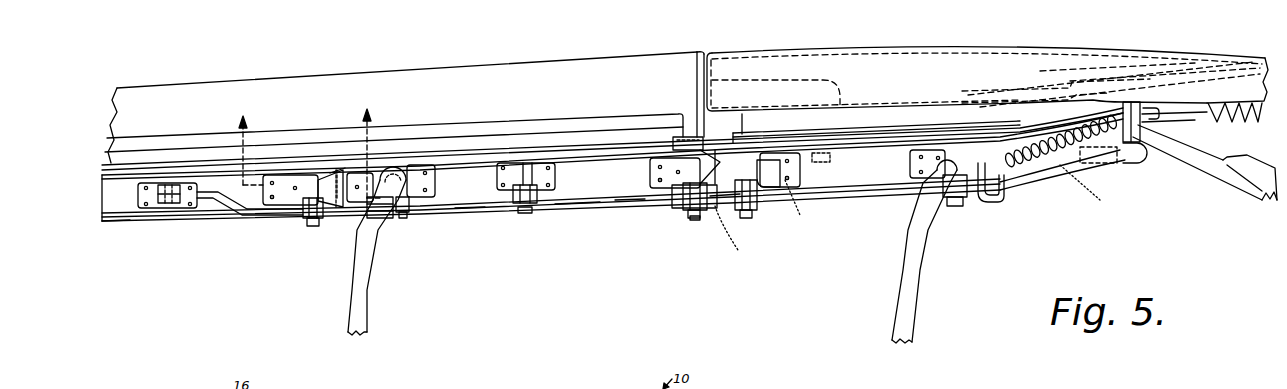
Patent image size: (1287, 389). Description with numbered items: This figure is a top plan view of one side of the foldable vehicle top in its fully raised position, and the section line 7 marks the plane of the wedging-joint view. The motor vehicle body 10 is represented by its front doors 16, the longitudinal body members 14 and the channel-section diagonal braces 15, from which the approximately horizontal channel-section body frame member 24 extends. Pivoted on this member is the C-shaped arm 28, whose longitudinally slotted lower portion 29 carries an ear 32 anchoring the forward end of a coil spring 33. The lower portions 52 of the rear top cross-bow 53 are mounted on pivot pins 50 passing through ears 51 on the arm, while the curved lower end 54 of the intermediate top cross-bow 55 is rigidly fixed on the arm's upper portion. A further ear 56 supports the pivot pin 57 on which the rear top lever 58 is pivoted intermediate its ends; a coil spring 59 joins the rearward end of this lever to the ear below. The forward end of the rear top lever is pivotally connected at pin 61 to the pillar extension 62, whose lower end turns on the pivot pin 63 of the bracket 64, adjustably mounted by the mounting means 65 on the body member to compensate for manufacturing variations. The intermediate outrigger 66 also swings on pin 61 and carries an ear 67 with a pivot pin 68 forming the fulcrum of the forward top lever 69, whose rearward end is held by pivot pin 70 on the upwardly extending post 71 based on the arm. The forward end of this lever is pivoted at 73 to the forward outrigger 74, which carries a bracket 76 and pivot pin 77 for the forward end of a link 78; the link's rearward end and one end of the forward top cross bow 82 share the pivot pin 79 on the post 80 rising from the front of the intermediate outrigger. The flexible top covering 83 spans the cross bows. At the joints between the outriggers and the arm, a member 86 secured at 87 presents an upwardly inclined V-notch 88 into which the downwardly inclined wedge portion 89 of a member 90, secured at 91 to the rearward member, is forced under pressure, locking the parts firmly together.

The section line 7- 7 is at (308, 147).
The motor vehicle body 10 is at (898, 48).
The longitudinal body members 14 is at (847, 100).
The diagonal braces 15 is at (1030, 83).
The front doors 16 is at (452, 68).
The horizontal body frame member 24 is at (840, 134).
The C-shaped arm 28 is at (1027, 180).
The lower portion of C-shaped arm 29 is at (1088, 178).
The ear 32 is at (1160, 115).
The coil spring 33 is at (1232, 122).
The pivot pin 50 is at (1133, 164).
The ear 51 is at (1175, 121).
The lower portion of rear top cross-bow 52 is at (1196, 162).
The rear top cross-bow 53 is at (1249, 162).
The curved lower end of intermediate top cross-bow 54 is at (980, 201).
The intermediate top cross-bow 55 is at (916, 264).
The ear 56 is at (911, 173).
The pivot pin 57 is at (957, 206).
The rear top lever 58 is at (837, 203).
The coil spring 59 is at (1062, 168).
The pivot pin 61 is at (697, 221).
The pillar arm or pillar extension 62 is at (687, 214).
The pivot pin 63 is at (727, 234).
The bracket 64 is at (800, 214).
The adjustable mounting means 65 is at (830, 158).
The intermediate outrigger 66 is at (573, 201).
The ear 67 is at (547, 176).
The pivot pin 68 is at (522, 214).
The forward top lever 69 is at (470, 212).
The pivot pin 70 is at (748, 218).
The upwardly extending post 71 is at (772, 183).
The pivotal connection 73 is at (312, 227).
The forward outrigger 74 is at (123, 221).
The bracket 76 is at (185, 208).
The pivot pin 77 is at (165, 208).
The link 78 is at (247, 216).
The pivot pin 79 is at (380, 220).
The post 80 is at (403, 215).
The forward top cross bow 82 is at (366, 275).
The flexible top covering 83 is at (710, 148).
The member 86 is at (290, 206).
The securing means 87 is at (273, 206).
The V-notch 88 is at (323, 180).
The V-shaped wedge portion 89 is at (338, 172).
The member 90 is at (358, 186).
The securing means 91 is at (434, 178).